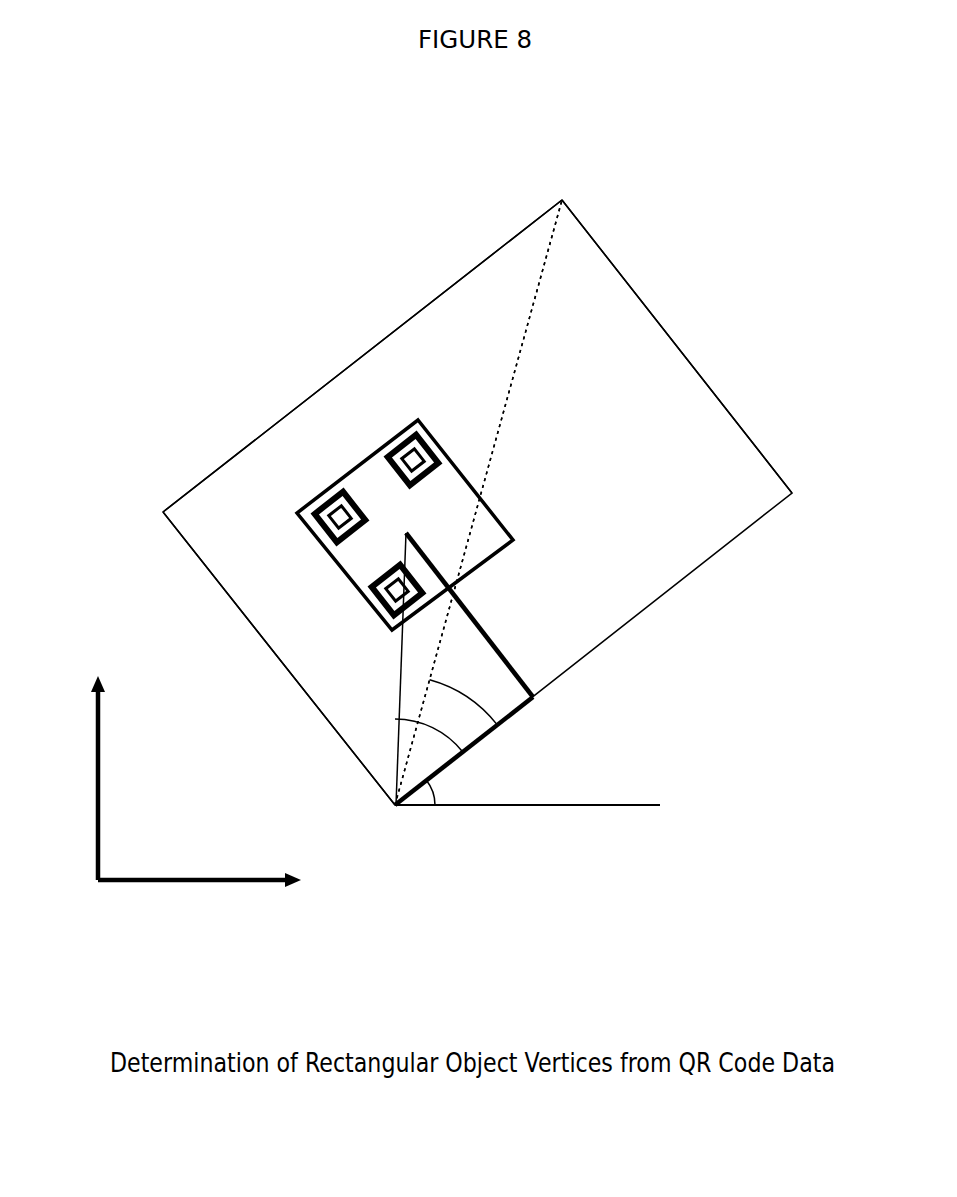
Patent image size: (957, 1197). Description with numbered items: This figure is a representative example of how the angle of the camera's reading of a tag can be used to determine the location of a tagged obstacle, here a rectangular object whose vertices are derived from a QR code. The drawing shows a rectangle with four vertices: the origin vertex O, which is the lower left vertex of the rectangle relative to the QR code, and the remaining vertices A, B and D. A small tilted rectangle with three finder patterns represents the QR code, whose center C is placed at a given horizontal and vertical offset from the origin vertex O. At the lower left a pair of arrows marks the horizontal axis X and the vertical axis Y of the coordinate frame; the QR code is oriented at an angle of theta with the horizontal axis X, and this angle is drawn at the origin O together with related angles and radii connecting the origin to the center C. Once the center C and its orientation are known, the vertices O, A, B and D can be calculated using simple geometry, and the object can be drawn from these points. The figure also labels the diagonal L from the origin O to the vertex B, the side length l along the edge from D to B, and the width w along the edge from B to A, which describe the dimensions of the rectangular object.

The vertex A is at (497, 502).
The vertex B is at (486, 481).
The QR code center C is at (405, 612).
The vertex D is at (256, 645).
The origin vertex O is at (518, 692).
The horizontal axis X is at (199, 903).
The vertical axis Y is at (82, 778).
The diagonal length L is at (478, 502).
The rectangle length l is at (362, 356).
The rectangle width w is at (677, 346).